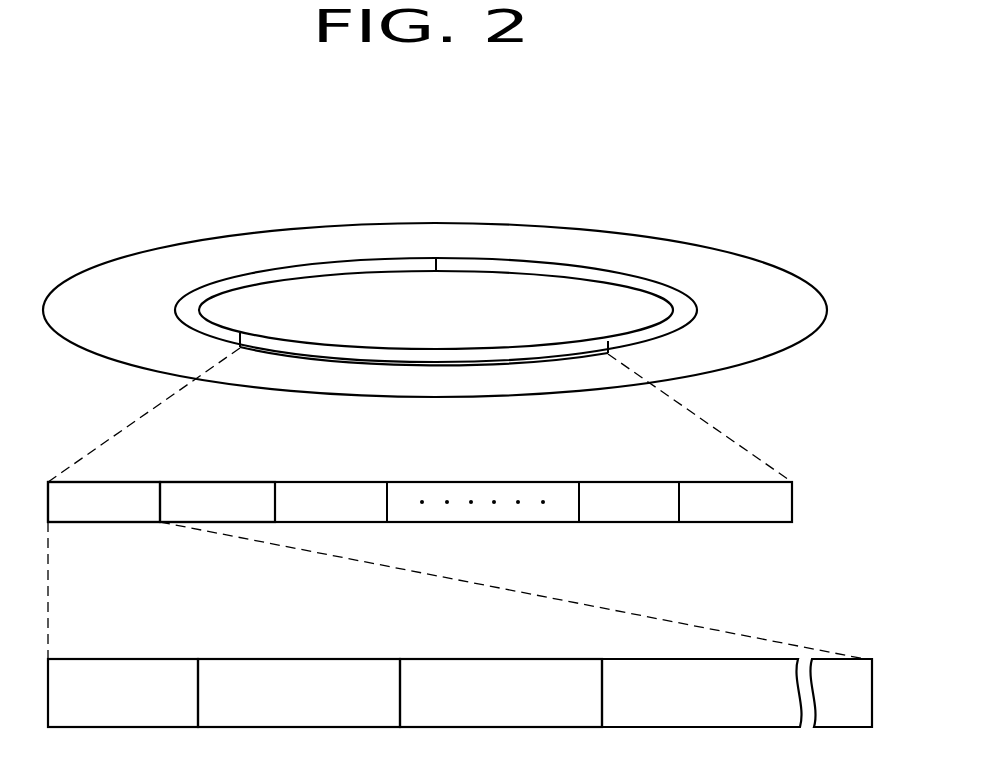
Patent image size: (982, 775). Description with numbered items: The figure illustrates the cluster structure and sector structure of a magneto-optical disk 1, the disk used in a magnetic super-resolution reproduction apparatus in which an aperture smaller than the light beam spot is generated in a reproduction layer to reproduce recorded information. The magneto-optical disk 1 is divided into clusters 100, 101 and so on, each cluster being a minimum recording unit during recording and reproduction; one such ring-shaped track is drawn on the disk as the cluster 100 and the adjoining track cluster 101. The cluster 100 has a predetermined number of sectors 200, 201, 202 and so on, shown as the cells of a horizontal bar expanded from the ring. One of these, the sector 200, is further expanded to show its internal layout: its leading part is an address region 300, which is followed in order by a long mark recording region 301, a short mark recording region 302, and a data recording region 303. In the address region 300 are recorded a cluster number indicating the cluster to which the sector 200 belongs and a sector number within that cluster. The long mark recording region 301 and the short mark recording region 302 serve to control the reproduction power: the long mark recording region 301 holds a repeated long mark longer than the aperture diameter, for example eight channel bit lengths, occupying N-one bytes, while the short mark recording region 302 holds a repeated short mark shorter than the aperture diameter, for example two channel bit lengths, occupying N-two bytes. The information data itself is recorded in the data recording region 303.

The magneto-optical disk 1 is at (122, 253).
The cluster 100 is at (372, 345).
The cluster 101 is at (698, 312).
The sector 200 is at (88, 482).
The sector 201 is at (225, 482).
The sector 202 is at (333, 482).
The address region 300 is at (135, 659).
The long mark recording region 301 is at (303, 659).
The short mark recording region 302 is at (475, 659).
The data recording region 303 is at (697, 659).